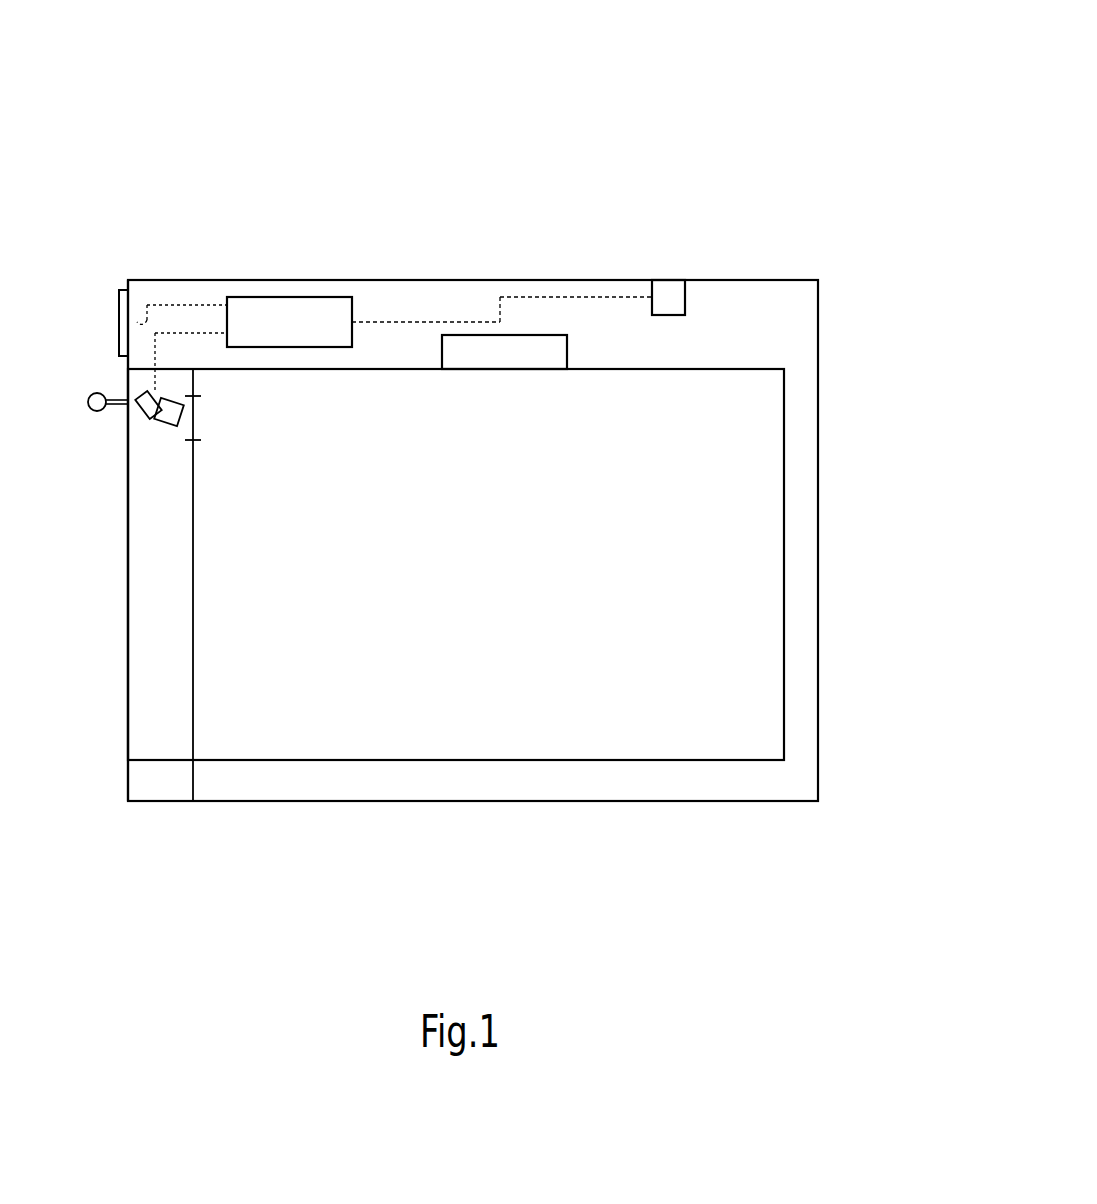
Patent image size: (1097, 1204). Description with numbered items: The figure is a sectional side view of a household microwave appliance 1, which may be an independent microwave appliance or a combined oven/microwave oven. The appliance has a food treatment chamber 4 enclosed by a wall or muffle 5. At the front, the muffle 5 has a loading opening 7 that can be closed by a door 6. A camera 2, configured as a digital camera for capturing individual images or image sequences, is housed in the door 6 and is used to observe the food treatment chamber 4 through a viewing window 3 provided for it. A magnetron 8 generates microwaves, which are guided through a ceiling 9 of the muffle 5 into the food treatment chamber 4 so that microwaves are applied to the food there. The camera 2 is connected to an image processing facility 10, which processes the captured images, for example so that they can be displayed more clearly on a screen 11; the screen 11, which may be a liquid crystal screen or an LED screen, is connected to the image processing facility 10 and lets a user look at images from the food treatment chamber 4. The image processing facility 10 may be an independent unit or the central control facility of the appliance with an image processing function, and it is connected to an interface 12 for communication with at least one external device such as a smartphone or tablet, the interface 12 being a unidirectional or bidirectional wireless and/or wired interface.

The household microwave appliance 1 is at (722, 135).
The camera 2 is at (137, 418).
The viewing window 3 is at (202, 420).
The food treatment chamber 4 is at (698, 724).
The muffle 5 is at (784, 555).
The door 6 is at (141, 515).
The loading opening 7 is at (216, 596).
The magnetron 8 is at (493, 355).
The ceiling 9 is at (632, 369).
The image processing facility 10 is at (297, 297).
The screen 11 is at (119, 322).
The interface 12 is at (667, 280).